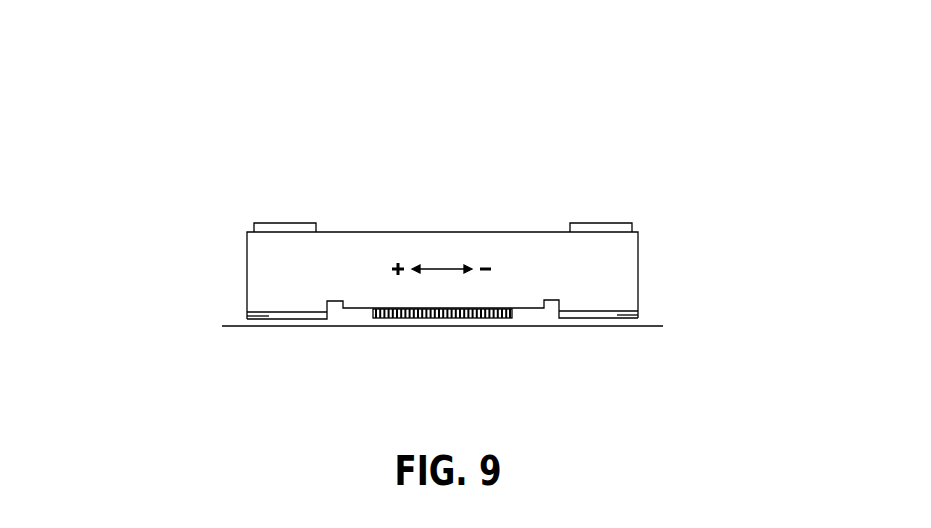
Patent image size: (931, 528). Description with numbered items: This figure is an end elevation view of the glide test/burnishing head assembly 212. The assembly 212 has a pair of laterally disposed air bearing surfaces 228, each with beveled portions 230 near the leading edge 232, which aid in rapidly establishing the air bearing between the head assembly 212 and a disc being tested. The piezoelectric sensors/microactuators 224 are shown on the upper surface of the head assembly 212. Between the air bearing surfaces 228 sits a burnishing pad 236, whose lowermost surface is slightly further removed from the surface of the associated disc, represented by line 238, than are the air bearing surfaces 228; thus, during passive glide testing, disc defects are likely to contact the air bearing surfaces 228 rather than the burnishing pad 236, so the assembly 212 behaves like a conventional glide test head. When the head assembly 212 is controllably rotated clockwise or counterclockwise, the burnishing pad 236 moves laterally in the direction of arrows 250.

The glide test/burnishing head assembly 212 is at (187, 182).
The piezoelectric sensors/microactuators 224 is at (284, 223).
The air bearing surfaces 228 is at (289, 319).
The beveled portions 230 is at (269, 316).
The leading edge 232 is at (602, 251).
The burnishing pad 236 is at (443, 318).
The line 238 is at (642, 327).
The arrows 250 is at (445, 269).